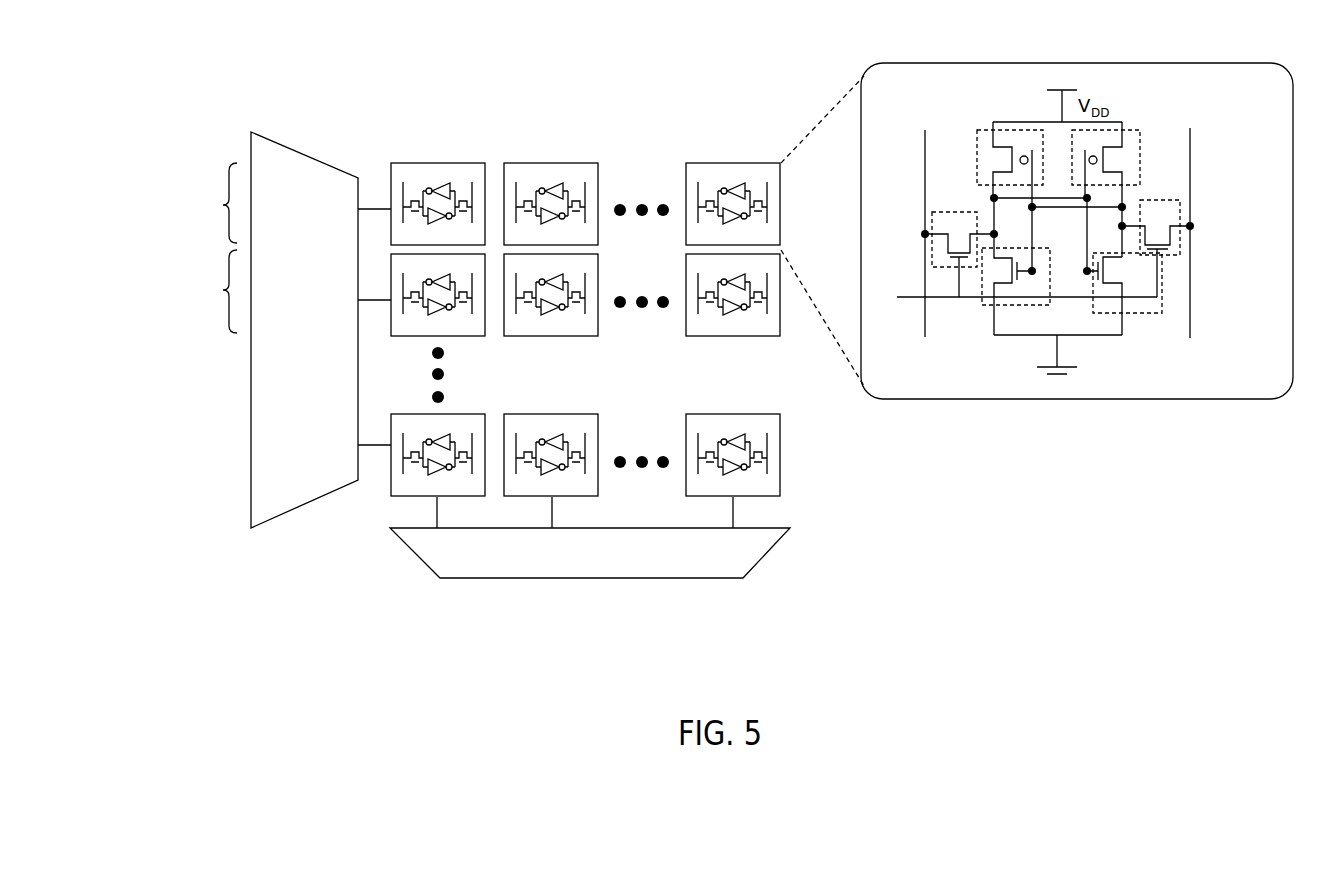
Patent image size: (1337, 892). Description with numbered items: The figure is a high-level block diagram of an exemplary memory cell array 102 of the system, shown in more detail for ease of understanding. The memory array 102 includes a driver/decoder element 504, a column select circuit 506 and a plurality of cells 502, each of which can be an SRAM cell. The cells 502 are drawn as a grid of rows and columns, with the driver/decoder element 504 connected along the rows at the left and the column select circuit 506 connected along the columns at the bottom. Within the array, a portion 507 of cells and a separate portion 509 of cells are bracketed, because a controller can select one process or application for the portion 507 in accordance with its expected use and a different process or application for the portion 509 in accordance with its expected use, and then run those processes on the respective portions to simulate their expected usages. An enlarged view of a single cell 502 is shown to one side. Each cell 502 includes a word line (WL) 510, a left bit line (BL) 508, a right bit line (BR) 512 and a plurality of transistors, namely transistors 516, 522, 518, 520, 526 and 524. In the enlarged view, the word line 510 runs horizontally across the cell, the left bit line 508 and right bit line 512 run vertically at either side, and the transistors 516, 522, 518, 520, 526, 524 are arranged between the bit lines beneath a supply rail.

The memory cell array 102 is at (307, 69).
The cell 502 is at (698, 162).
The driver/decoder element 504 is at (250, 400).
The column select circuit 506 is at (576, 578).
The portion of cells 507 is at (228, 205).
The portion of cells 509 is at (228, 290).
The left bit line (BL) 508 is at (925, 140).
The word line (WL) 510 is at (905, 297).
The right bit line (BR) 512 is at (1192, 165).
The transistor 516 is at (985, 130).
The transistor 522 is at (1133, 130).
The transistor 518 is at (982, 300).
The transistor 520 is at (1145, 313).
The transistor 526 is at (977, 212).
The transistor 524 is at (1180, 207).